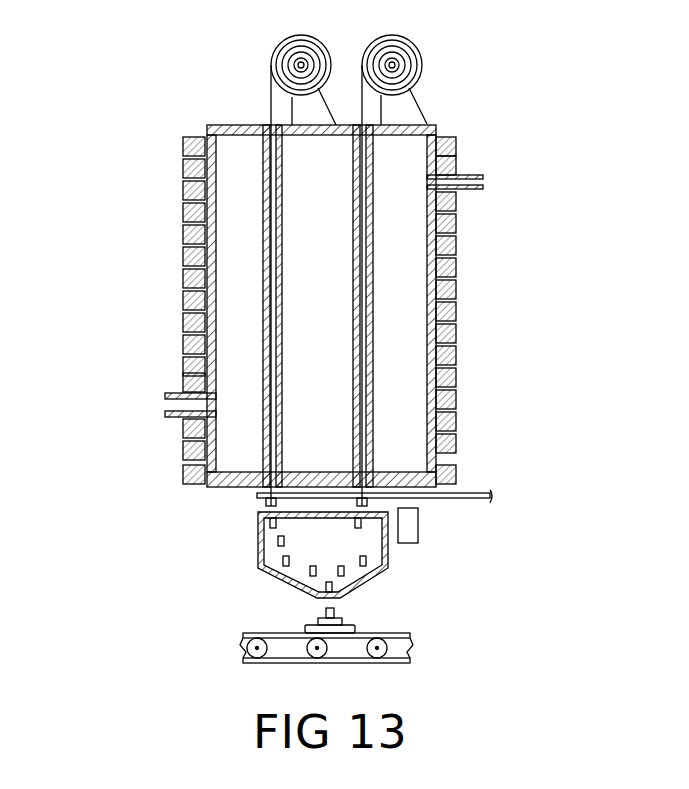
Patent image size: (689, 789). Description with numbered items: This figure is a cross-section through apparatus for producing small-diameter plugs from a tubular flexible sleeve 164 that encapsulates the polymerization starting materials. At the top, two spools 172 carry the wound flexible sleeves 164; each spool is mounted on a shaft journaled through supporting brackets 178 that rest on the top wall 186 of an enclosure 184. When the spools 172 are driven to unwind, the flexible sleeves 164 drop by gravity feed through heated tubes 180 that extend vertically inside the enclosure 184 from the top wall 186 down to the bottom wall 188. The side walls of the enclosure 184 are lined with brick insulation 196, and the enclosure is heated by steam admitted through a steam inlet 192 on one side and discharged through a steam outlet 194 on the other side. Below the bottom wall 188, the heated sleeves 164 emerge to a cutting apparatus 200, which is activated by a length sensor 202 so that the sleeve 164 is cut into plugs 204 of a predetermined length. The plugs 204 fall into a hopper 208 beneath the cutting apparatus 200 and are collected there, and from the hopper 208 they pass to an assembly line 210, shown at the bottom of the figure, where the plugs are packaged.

The spool 172 is at (285, 36).
The tubular flexible sleeve 164 is at (271, 96).
The supporting bracket 178 is at (422, 104).
The top wall 186 is at (207, 130).
The brick insulation 196 is at (455, 383).
The enclosure 184 is at (188, 322).
The heated tube 180 is at (263, 279).
The steam inlet 192 is at (172, 393).
The steam outlet 194 is at (484, 176).
The bottom wall 188 is at (225, 493).
The cutting apparatus 200 is at (468, 500).
The length sensor 202 is at (418, 530).
The plug 204 is at (381, 587).
The hopper 208 is at (275, 575).
The assembly line 210 is at (414, 623).